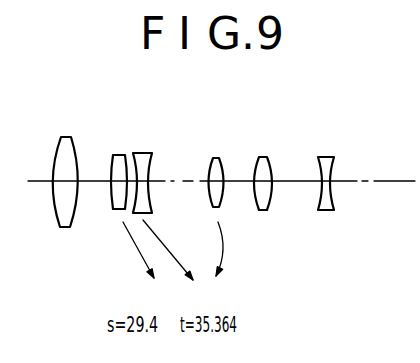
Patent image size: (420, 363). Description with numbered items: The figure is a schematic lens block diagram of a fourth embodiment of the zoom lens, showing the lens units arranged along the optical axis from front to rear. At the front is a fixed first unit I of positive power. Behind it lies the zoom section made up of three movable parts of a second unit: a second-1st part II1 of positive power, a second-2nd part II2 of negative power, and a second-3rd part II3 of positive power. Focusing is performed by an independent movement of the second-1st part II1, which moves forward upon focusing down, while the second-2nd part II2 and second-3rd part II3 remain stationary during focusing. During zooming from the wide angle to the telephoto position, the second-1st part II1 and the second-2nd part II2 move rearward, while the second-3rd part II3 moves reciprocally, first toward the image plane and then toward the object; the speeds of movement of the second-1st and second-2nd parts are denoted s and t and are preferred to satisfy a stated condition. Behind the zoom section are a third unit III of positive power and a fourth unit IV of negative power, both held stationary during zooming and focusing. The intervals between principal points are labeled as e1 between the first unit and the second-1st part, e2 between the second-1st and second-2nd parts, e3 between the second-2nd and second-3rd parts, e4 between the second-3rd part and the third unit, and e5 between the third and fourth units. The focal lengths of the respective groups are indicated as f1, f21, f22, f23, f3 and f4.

The first unit I is at (62, 135).
The second-1st part II1 is at (116, 153).
The second-2nd part II2 is at (146, 151).
The second-3rd part II3 is at (213, 156).
The third unit III is at (258, 156).
The fourth unit IV is at (328, 156).
The interval between principal points of first unit and second-1st part e1 is at (92, 180).
The interval between principal points of second-1st and second-2nd parts e2 is at (129, 180).
The interval between principal points of second-2nd and second-3rd parts e3 is at (179, 180).
The interval between principal points of second-3rd part and third unit e4 is at (239, 180).
The interval between principal points of third and fourth units e5 is at (293, 180).
The focal length of first unit f1 is at (58, 229).
The focal length of second-1st part f21 is at (117, 212).
The focal length of second-2nd part f22 is at (152, 203).
The focal length of second-3rd part f23 is at (219, 209).
The focal length of third unit f3 is at (265, 212).
The focal length of fourth unit f4 is at (328, 212).
The speed of movement of second-1st part s is at (138, 254).
The speed of movement of second-2nd part t is at (183, 253).